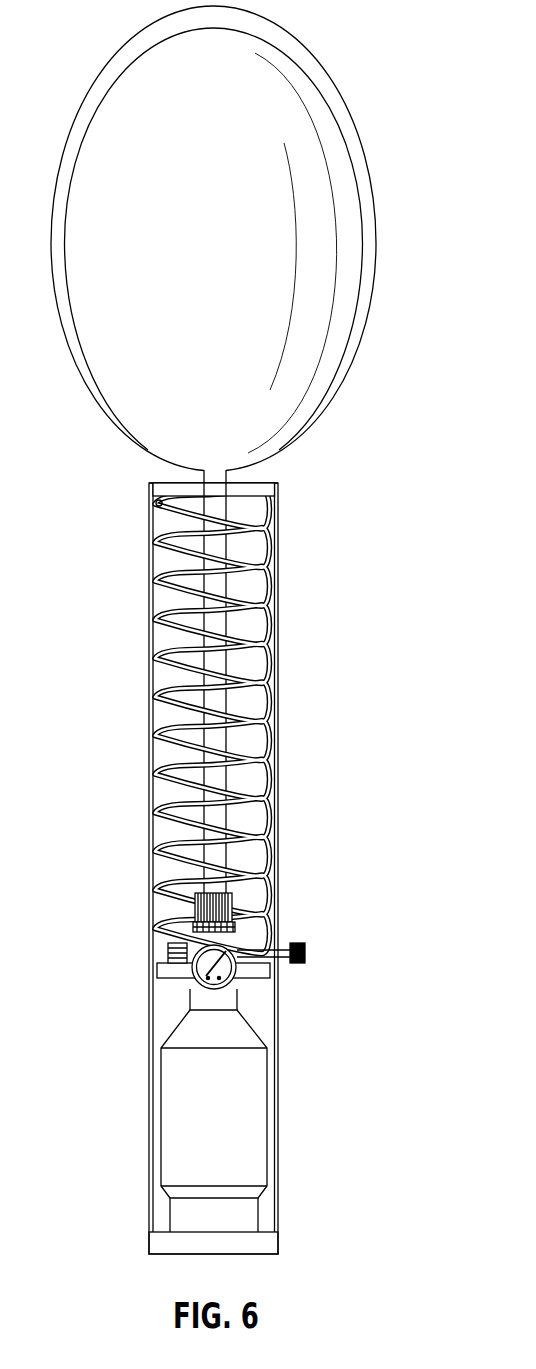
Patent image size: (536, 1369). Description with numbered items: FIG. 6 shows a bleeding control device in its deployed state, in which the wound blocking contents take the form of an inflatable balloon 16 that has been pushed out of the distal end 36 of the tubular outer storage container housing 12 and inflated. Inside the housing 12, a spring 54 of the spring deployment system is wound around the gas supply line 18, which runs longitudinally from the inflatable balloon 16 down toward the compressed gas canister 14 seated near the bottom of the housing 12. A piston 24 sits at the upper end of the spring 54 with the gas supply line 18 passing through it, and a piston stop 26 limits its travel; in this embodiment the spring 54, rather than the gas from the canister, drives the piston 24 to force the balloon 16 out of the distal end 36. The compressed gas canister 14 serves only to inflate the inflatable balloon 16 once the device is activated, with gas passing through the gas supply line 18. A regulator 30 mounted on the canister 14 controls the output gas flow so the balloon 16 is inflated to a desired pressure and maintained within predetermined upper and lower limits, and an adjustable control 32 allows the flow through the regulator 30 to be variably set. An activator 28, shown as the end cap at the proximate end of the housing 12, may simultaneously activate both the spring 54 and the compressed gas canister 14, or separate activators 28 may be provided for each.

The outer storage container housing 12 is at (282, 873).
The compressed gas canister 14 is at (257, 1087).
The inflatable balloon 16 is at (307, 373).
The gas supply line 18 is at (242, 623).
The piston 24 is at (275, 495).
The piston stop 26 is at (158, 503).
The activator 28 is at (267, 1243).
The regulator 30 is at (172, 952).
The adjustable control 32 is at (298, 963).
The distal end 36 is at (275, 483).
The spring 54 is at (262, 755).